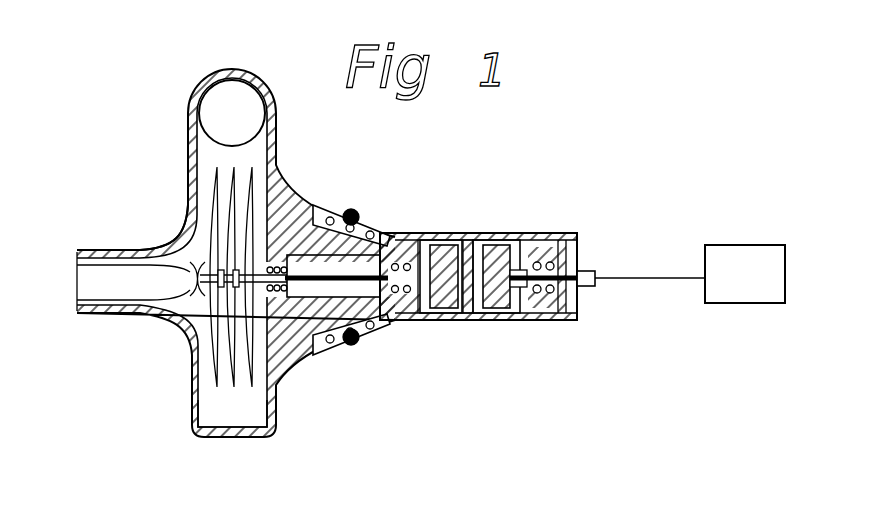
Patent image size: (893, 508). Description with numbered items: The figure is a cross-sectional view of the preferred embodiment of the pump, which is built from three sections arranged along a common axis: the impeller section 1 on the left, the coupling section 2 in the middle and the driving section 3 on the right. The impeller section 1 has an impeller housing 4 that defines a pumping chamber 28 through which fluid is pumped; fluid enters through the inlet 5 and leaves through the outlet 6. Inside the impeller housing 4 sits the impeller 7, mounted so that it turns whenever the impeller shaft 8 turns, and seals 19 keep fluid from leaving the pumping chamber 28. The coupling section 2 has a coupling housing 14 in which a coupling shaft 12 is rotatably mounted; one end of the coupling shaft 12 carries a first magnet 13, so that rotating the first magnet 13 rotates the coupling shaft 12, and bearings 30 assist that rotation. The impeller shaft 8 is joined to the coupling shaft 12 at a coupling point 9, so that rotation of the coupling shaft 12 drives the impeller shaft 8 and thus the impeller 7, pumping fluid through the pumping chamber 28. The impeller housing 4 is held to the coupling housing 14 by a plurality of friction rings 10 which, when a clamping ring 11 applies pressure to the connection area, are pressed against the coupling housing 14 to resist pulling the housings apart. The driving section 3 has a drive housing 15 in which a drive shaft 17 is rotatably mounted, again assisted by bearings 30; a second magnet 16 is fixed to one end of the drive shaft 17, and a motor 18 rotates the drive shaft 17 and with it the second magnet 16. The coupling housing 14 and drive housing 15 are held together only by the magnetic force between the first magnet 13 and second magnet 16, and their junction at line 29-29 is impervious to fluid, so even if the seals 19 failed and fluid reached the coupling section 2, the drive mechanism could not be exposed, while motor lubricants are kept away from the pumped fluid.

The impeller section 1 is at (72, 445).
The coupling section 2 is at (310, 467).
The driving section 3 is at (468, 445).
The impeller housing 4 is at (117, 247).
The inlet 5 is at (80, 278).
The outlet 6 is at (223, 88).
The impeller 7 is at (209, 194).
The impeller shaft 8 is at (306, 212).
The coupling point 9 is at (373, 240).
The friction rings 10 is at (375, 232).
The clamping ring 11 is at (348, 345).
The coupling shaft 12 is at (402, 232).
The first magnet 13 is at (438, 232).
The coupling housing 14 is at (441, 322).
The drive housing 15 is at (577, 322).
The second magnet 16 is at (498, 232).
The drive shaft 17 is at (588, 264).
The motor 18 is at (733, 245).
The seals 19 is at (522, 233).
The pumping chamber 28 is at (208, 400).
The line 29- 29 is at (474, 232).
The bearings 30 is at (404, 320).